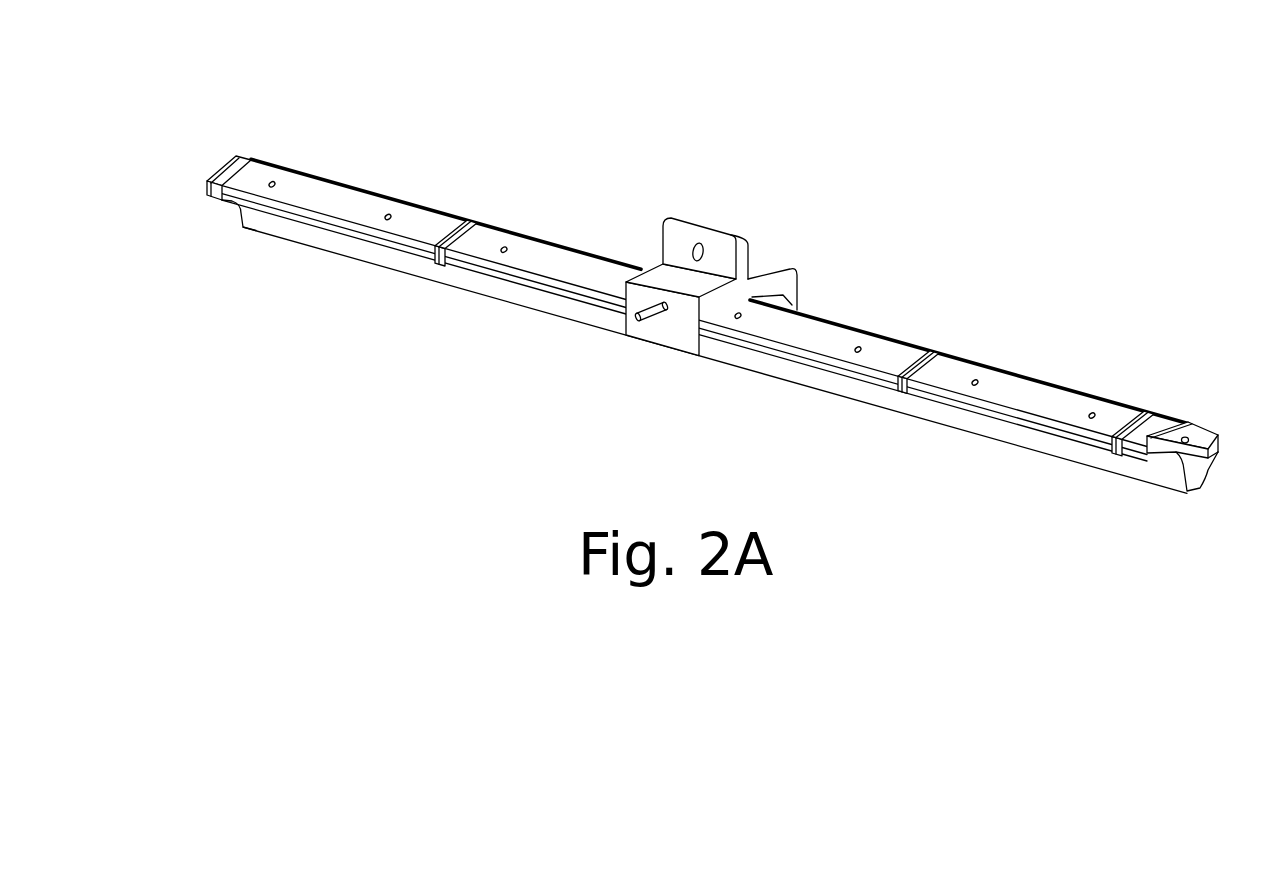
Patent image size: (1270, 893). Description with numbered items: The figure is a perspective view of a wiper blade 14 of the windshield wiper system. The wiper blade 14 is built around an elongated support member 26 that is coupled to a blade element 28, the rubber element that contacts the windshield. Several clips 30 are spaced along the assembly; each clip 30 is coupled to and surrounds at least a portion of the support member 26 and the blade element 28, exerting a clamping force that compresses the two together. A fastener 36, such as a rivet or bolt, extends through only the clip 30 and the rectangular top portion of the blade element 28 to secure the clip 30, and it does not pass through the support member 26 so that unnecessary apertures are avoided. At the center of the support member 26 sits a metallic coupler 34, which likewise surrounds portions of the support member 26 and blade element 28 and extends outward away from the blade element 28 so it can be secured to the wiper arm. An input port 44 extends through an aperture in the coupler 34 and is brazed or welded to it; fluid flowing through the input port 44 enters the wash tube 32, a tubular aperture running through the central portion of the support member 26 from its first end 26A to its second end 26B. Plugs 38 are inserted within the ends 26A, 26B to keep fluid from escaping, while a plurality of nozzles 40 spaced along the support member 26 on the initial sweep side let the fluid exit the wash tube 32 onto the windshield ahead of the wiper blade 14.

The wiper blade 14 is at (702, 291).
The support member 26 is at (333, 195).
The first end 26A is at (1195, 408).
The second end 26B is at (213, 157).
The blade element 28 is at (383, 257).
The clip 30 is at (236, 192).
The wash tube 32 is at (1170, 455).
The coupler 34 is at (718, 253).
The fastener 36 is at (437, 260).
The plug 38 is at (1188, 443).
The nozzle 40 is at (856, 352).
The input port 44 is at (634, 330).